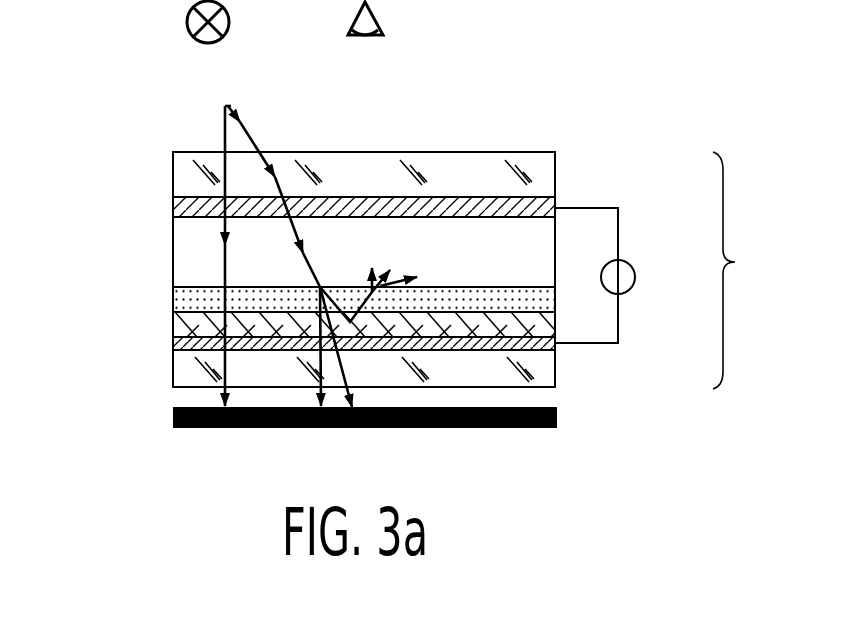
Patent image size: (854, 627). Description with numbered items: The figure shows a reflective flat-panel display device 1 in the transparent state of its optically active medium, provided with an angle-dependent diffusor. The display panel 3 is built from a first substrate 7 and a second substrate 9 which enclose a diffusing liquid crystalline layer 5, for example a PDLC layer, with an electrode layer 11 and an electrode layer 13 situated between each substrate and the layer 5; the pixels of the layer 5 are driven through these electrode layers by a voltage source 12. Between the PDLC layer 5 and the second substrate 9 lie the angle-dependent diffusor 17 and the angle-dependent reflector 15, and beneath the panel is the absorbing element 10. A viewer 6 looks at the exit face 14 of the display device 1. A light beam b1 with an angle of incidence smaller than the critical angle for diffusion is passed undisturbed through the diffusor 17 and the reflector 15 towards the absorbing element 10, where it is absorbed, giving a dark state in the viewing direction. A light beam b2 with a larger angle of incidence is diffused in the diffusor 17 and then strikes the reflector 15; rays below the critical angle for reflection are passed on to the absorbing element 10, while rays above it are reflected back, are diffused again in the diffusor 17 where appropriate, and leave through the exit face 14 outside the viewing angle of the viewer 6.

The flat-panel display device 1 is at (128, 448).
The display panel 3 is at (735, 262).
The liquid crystalline layer 5 is at (185, 258).
The viewer 6 is at (380, 14).
The first substrate 7 is at (547, 165).
The second substrate 9 is at (180, 372).
The absorbing element 10 is at (557, 418).
The electrode layer 11 is at (172, 204).
The voltage source 12 is at (635, 279).
The electrode layer 13 is at (173, 345).
The exit face 14 is at (498, 152).
The angle-dependent reflector 15 is at (173, 325).
The angle-dependent diffusor 17 is at (173, 297).
The light beam b1 is at (221, 118).
The light beam b2 is at (244, 120).